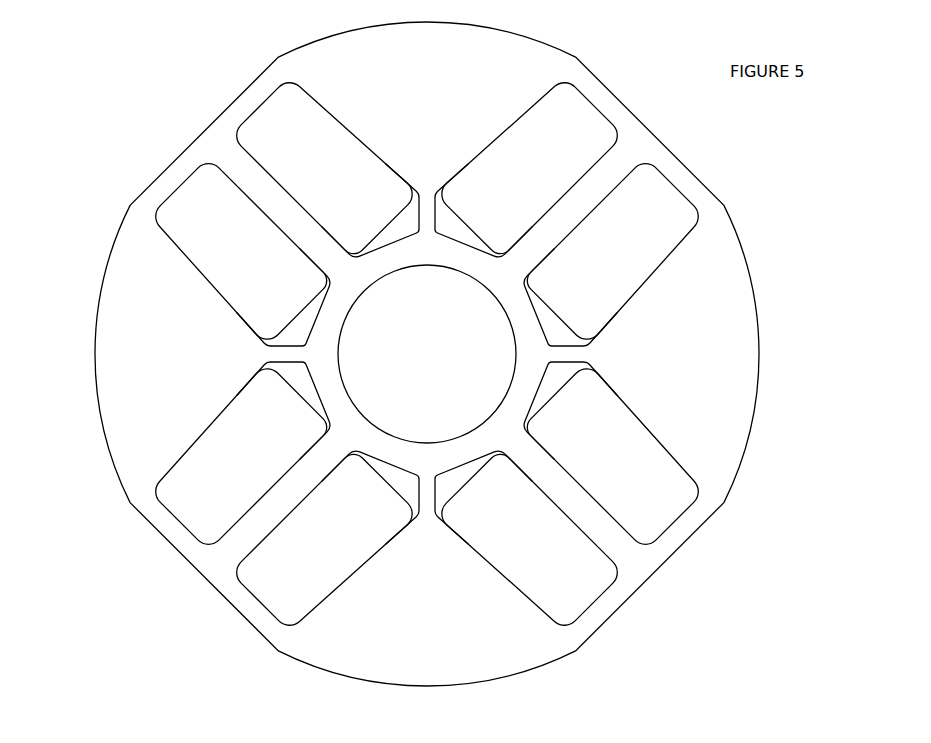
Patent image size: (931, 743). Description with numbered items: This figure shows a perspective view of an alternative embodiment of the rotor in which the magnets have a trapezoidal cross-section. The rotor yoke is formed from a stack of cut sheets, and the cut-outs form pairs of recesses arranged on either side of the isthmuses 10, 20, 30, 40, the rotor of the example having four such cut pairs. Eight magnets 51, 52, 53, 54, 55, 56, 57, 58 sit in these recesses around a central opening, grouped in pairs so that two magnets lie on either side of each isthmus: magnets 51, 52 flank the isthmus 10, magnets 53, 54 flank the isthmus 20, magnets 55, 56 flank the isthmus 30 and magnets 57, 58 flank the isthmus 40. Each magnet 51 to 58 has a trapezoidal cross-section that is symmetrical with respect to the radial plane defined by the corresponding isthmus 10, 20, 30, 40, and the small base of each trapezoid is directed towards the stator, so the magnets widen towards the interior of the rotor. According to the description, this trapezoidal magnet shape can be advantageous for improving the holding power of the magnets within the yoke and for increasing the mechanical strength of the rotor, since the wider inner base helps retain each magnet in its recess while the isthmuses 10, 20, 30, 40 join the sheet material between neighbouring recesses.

The isthmus 10 is at (427, 354).
The isthmus 20 is at (700, 230).
The isthmus 30 is at (714, 546).
The isthmus 40 is at (157, 528).
The magnet 51 is at (239, 272).
The magnet 52 is at (320, 186).
The magnet 53 is at (504, 186).
The magnet 54 is at (584, 272).
The magnet 55 is at (584, 456).
The magnet 56 is at (503, 544).
The magnet 57 is at (321, 536).
The magnet 58 is at (239, 456).